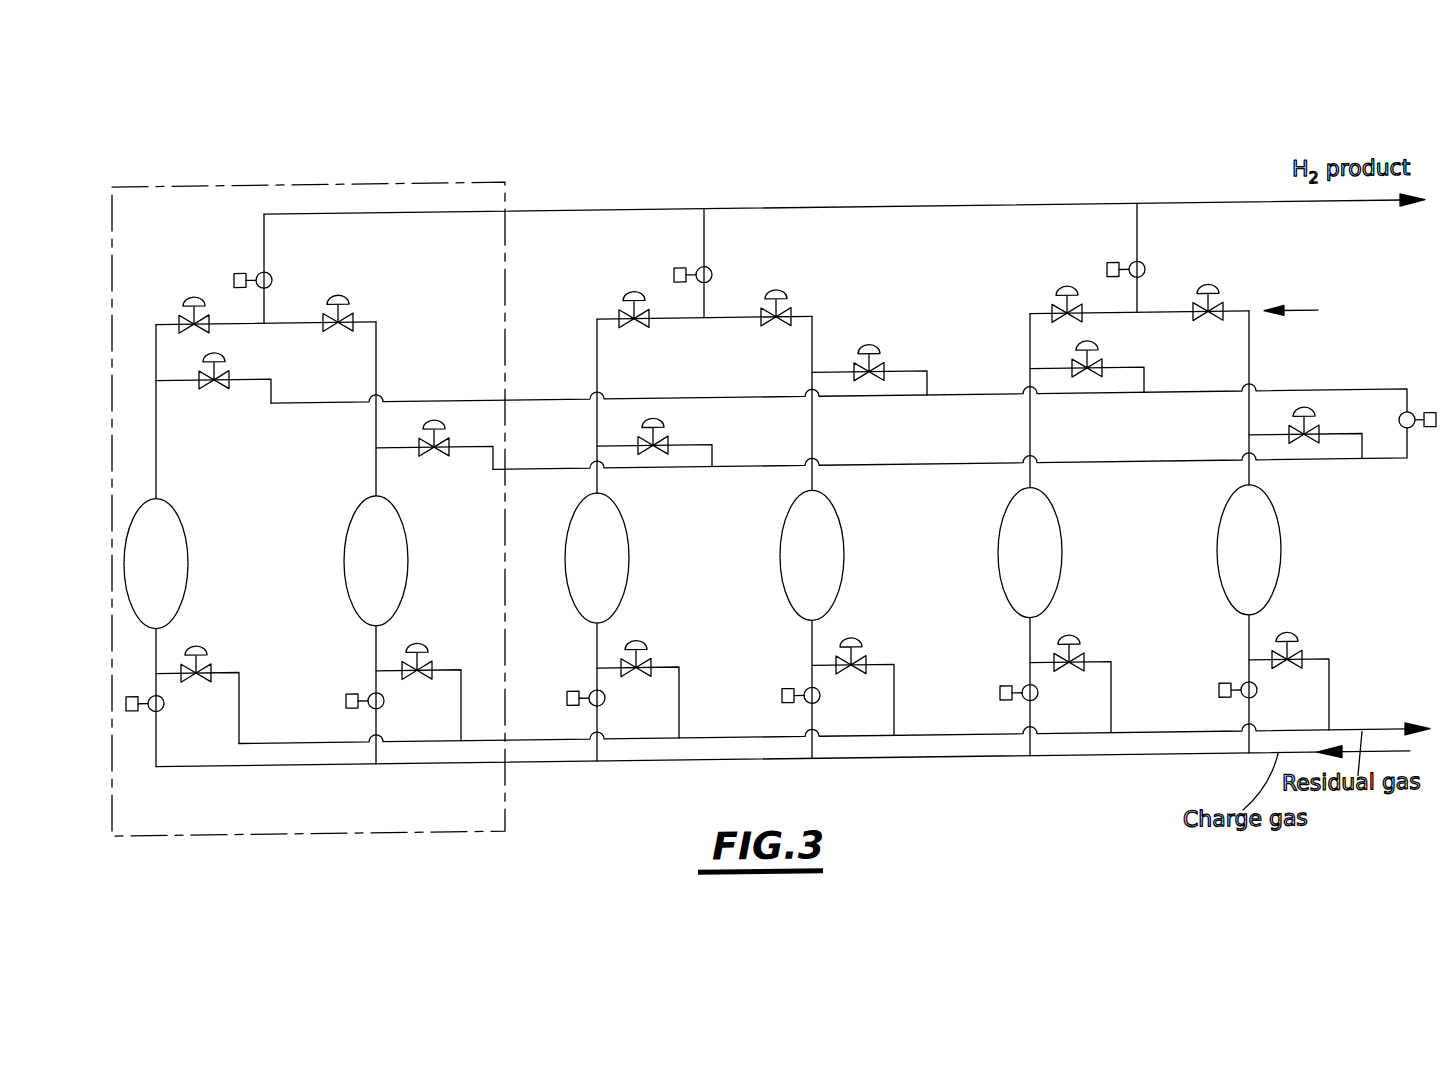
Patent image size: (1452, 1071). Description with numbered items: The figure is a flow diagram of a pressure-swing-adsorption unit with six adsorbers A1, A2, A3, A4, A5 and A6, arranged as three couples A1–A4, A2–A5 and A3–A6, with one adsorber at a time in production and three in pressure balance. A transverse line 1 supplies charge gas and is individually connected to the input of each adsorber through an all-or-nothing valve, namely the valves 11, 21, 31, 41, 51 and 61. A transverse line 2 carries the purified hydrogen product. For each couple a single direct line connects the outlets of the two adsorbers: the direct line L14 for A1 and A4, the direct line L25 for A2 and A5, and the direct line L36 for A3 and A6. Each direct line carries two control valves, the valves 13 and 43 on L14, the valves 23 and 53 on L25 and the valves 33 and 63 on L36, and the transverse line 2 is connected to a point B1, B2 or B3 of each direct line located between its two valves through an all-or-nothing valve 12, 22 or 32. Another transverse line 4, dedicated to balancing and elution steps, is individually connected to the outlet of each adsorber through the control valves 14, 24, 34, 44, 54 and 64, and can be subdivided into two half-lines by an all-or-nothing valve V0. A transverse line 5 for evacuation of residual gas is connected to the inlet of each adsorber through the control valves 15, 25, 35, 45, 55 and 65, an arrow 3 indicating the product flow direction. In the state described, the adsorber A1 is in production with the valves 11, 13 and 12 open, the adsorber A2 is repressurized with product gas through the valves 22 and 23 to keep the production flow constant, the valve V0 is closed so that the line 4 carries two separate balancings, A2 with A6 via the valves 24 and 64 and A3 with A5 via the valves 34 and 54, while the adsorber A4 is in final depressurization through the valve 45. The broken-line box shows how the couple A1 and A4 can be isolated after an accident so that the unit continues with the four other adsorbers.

The transverse line for supply of charge gas 1 is at (1078, 762).
The transverse line for purified hydrogen production 2 is at (1255, 209).
The product gas flow 3 is at (1301, 310).
The transverse line 4 is at (940, 402).
The transverse line for evacuation of residual gas 5 is at (1386, 738).
The valve TOR 11 is at (133, 706).
The valve TOR 12 is at (233, 274).
The control valve 13 is at (188, 294).
The control valve 14 is at (213, 385).
The control valve 15 is at (199, 641).
The valve TOR 21 is at (566, 698).
The valve TOR 22 is at (672, 274).
The control valve 23 is at (626, 298).
The control valve 24 is at (658, 456).
The control valve 25 is at (638, 642).
The valve TOR 31 is at (1000, 698).
The valve TOR 32 is at (1105, 270).
The control valve 33 is at (1060, 295).
The control valve 34 is at (1096, 350).
The control valve 35 is at (1071, 642).
The valve TOR 41 is at (345, 698).
The control valve 43 is at (348, 296).
The control valve 44 is at (440, 455).
The control valve 45 is at (420, 642).
The valve TOR 51 is at (782, 698).
The control valve 53 is at (781, 300).
The control valve 54 is at (875, 354).
The control valve 55 is at (853, 643).
The valve TOR 61 is at (1218, 698).
The control valve 63 is at (1216, 297).
The control valve 64 is at (1309, 453).
The control valve 65 is at (1290, 642).
The adsorber A1 is at (156, 563).
The adsorber A2 is at (597, 558).
The adsorber A3 is at (1030, 552).
The adsorber A4 is at (376, 560).
The adsorber A5 is at (812, 555).
The adsorber A6 is at (1249, 549).
The point of the direct line B1 is at (264, 320).
The point of the direct line B2 is at (704, 320).
The point of the direct line B3 is at (1140, 319).
The direct line L14 is at (376, 356).
The direct line L25 is at (597, 358).
The direct line L36 is at (1030, 345).
The valve TOR V0 is at (1431, 422).